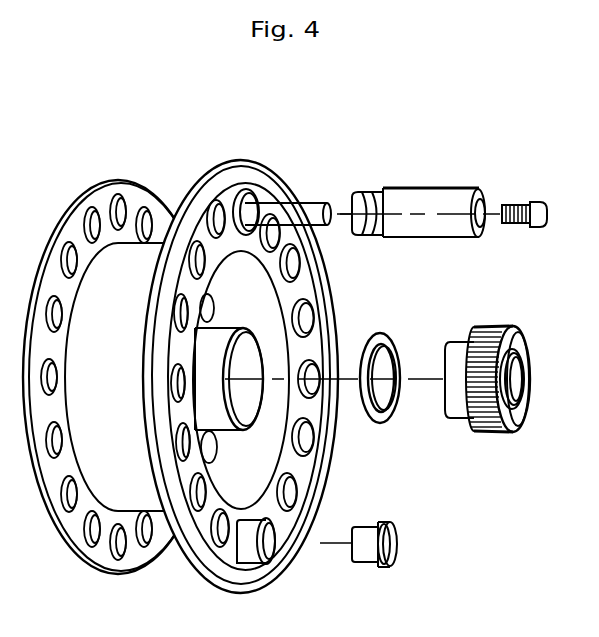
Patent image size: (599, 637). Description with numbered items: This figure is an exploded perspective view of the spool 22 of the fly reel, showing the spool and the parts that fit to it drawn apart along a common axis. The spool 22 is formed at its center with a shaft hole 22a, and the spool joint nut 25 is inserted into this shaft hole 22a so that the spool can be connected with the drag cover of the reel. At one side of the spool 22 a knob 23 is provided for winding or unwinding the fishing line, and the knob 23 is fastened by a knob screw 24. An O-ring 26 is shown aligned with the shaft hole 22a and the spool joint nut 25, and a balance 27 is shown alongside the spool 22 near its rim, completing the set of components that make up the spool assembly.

The spool 22 is at (190, 190).
The shaft hole 22a is at (242, 390).
The knob 23 is at (378, 192).
The knob screw 24 is at (504, 203).
The spool joint nut 25 is at (493, 432).
The O-ring 26 is at (388, 422).
The balance 27 is at (392, 560).